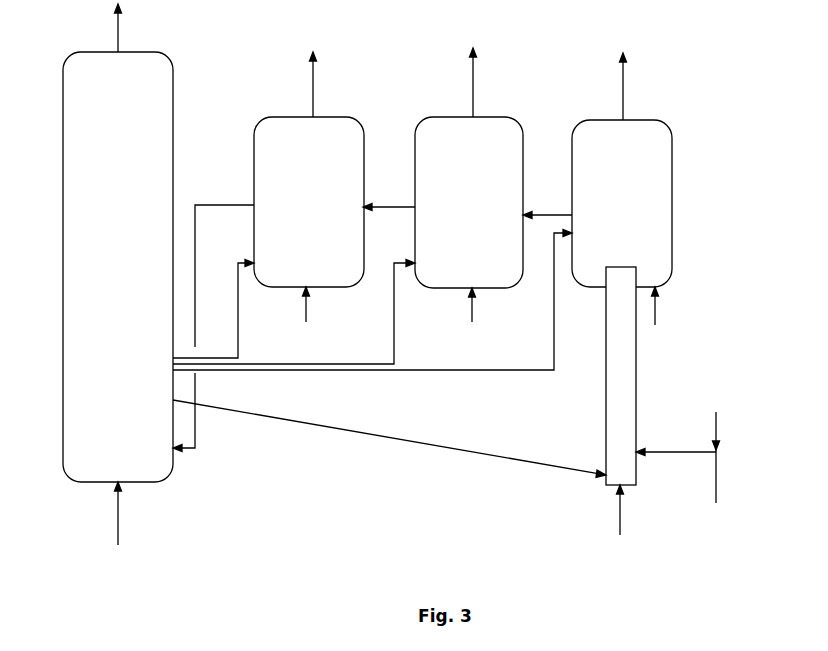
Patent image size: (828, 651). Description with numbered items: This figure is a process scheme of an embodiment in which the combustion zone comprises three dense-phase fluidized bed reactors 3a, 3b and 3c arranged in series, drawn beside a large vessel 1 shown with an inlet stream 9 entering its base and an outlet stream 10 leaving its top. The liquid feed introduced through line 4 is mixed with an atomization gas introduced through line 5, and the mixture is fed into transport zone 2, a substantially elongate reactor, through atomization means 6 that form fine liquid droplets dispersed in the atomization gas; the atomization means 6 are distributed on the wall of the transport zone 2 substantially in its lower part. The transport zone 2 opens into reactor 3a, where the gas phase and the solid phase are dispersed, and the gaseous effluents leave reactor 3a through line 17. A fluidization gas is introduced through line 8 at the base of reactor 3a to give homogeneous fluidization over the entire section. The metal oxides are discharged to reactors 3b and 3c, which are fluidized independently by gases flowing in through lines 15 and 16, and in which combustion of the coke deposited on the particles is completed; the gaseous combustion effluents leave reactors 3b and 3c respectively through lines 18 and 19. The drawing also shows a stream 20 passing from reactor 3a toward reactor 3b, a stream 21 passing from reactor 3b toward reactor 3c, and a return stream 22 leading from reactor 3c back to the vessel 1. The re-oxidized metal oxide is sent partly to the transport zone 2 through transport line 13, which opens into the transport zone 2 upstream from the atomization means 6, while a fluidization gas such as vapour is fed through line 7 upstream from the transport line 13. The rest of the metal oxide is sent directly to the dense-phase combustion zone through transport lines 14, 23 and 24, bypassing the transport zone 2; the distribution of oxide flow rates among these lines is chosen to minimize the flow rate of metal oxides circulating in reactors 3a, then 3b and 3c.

The reactor / main column 1 is at (118, 267).
The transport zone 2 is at (621, 376).
The dense-phase fluidized bed reactor 3a is at (622, 203).
The dense-phase fluidized bed reactor 3b is at (469, 202).
The dense-phase fluidized bed reactor 3c is at (309, 202).
The liquid feed line 4 is at (716, 486).
The atomization gas line 5 is at (716, 421).
The atomization means 6 is at (658, 453).
The fluidization gas line 7 is at (621, 507).
The fluidization gas line 8 is at (673, 306).
The feed stream to reactor 9 is at (136, 513).
The overhead stream from reactor 10 is at (139, 28).
The transport line 13 is at (389, 439).
The transport line 14 is at (372, 300).
The fluidization gas line 15 is at (452, 308).
The fluidization gas line 16 is at (325, 309).
The gaseous effluent line 17 is at (648, 86).
The gaseous effluent line 18 is at (495, 82).
The gaseous effluent line 19 is at (334, 84).
The stream from vessel 3a to 3b 20 is at (547, 203).
The stream from vessel 3b to 3c 21 is at (389, 196).
The return stream from vessel 3c to reactor 22 is at (213, 316).
The transport line 23 is at (294, 312).
The transport line 24 is at (225, 309).